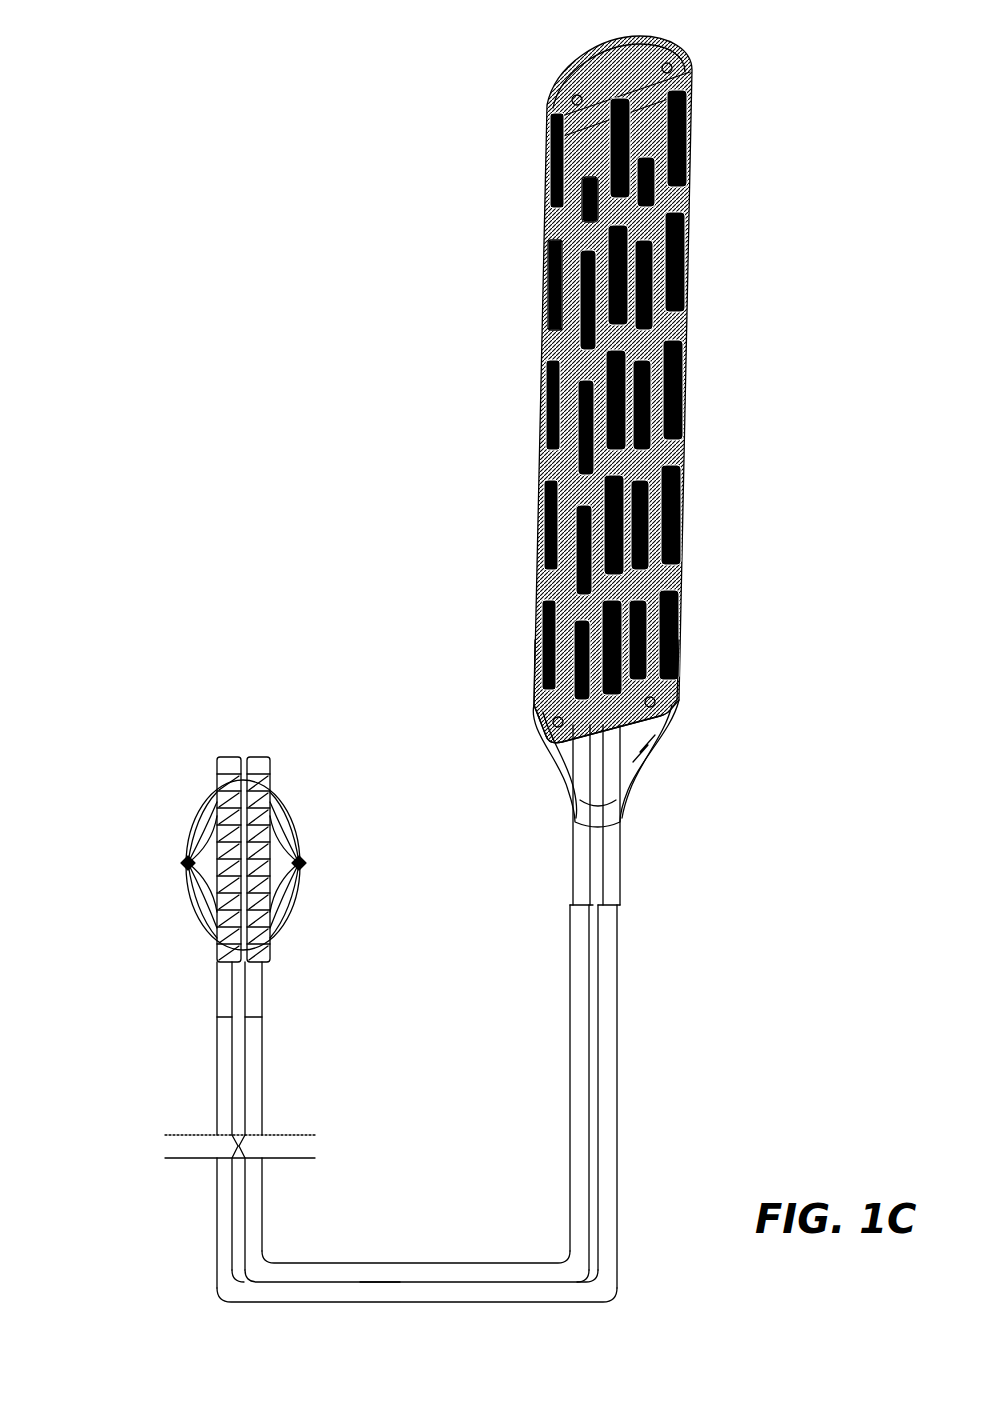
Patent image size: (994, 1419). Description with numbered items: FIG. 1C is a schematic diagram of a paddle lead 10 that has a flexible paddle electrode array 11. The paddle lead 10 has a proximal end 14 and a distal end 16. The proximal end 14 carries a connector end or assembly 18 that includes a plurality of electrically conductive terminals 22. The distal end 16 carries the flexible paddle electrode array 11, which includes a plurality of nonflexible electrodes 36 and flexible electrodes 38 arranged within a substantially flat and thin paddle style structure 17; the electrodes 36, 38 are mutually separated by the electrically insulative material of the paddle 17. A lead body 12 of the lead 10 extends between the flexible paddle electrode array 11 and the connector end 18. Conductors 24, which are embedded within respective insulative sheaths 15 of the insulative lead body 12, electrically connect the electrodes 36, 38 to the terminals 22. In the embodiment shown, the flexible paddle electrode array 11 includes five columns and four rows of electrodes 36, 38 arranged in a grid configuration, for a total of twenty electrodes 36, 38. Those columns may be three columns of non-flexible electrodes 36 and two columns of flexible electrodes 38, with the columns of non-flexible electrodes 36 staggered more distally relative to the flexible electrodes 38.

The paddle lead 10 is at (148, 546).
The flexible paddle electrode array 11 is at (518, 430).
The lead body 12 is at (485, 1222).
The proximal end 14 is at (284, 752).
The insulative sheaths 15 is at (377, 1262).
The distal end 16 is at (493, 35).
The paddle style structure 17 is at (676, 652).
The connector end or assembly 18 is at (155, 821).
The electrically conductive terminals 22 is at (242, 861).
The conductors 24 is at (573, 838).
The nonflexible electrodes 36 is at (548, 292).
The flexible electrodes 38 is at (593, 182).